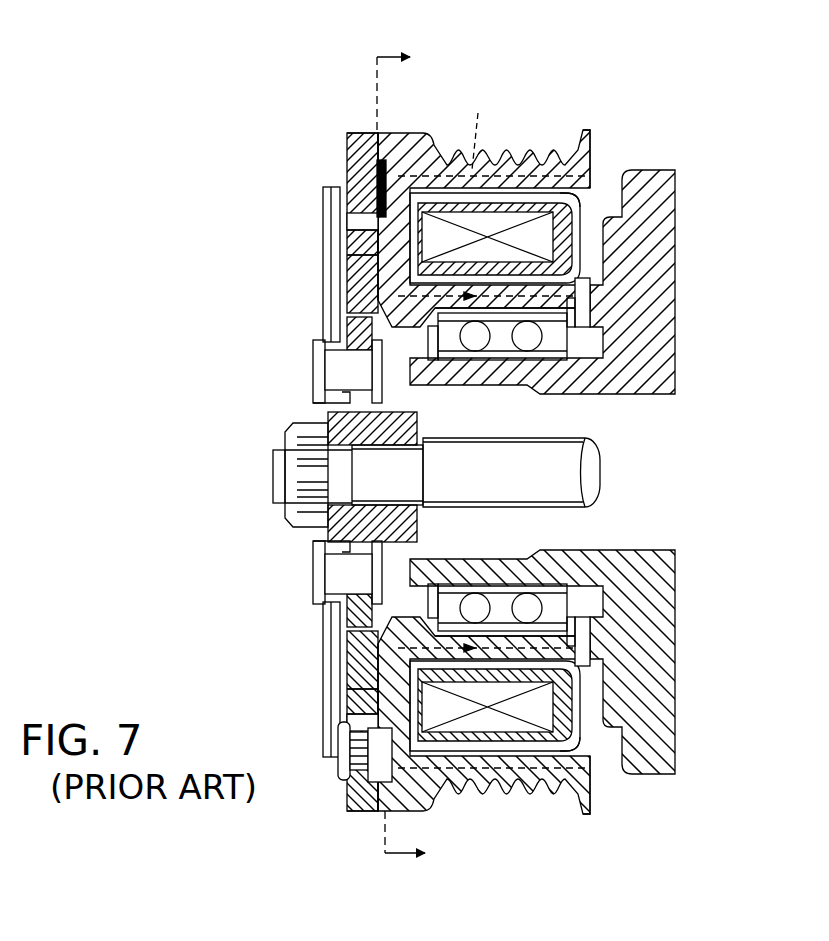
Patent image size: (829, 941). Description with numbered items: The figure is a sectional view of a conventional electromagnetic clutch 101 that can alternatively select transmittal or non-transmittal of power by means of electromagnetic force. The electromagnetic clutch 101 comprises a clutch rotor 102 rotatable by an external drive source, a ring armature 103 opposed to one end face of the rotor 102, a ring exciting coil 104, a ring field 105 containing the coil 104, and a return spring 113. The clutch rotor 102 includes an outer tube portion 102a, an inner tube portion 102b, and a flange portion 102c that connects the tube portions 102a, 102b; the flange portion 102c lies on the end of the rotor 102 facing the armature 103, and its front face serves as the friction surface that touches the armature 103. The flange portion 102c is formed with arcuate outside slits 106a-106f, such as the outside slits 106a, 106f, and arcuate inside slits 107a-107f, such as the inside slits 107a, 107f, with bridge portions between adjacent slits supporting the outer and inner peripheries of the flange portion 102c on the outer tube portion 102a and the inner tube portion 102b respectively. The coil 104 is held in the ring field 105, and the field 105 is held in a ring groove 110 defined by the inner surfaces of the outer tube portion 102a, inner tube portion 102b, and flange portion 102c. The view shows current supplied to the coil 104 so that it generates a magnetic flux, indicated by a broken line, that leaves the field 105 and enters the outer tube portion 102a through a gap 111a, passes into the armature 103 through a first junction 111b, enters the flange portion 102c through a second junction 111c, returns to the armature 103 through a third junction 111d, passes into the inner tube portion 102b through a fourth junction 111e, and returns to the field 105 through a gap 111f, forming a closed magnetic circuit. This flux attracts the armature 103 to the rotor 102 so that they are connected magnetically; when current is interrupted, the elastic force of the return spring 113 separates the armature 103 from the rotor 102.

The electromagnetic clutch 101 is at (552, 95).
The clutch rotor 102 is at (410, 125).
The outer tube portion 102a is at (578, 160).
The inner tube portion 102b is at (582, 305).
The flange portion 102c is at (418, 165).
The ring armature 103 is at (340, 140).
The ring exciting coil 104 is at (497, 220).
The ring field 105 is at (583, 192).
The arcuate outside slit 106a is at (247, 472).
The arcuate outside slit 106f is at (347, 235).
The arcuate outside slits 106a-106f is at (247, 472).
The arcuate inside slit 107a is at (247, 472).
The arcuate inside slit 107f is at (347, 290).
The arcuate inside slits 107a-107f is at (247, 472).
The ring groove 110 is at (590, 240).
The gap 111a is at (562, 190).
The first junction 111b is at (372, 150).
The second junction 111c is at (348, 212).
The third junction 111d is at (350, 265).
The fourth junction 111e is at (350, 318).
The gap 111f is at (590, 290).
The return spring 113 is at (347, 683).